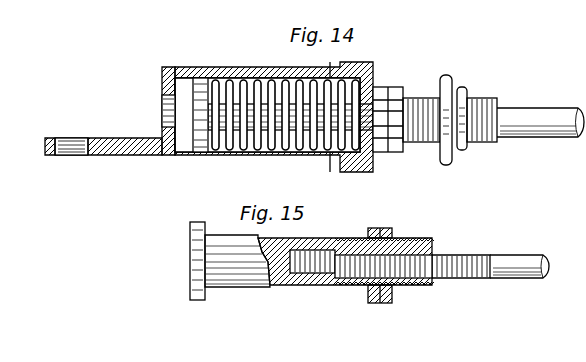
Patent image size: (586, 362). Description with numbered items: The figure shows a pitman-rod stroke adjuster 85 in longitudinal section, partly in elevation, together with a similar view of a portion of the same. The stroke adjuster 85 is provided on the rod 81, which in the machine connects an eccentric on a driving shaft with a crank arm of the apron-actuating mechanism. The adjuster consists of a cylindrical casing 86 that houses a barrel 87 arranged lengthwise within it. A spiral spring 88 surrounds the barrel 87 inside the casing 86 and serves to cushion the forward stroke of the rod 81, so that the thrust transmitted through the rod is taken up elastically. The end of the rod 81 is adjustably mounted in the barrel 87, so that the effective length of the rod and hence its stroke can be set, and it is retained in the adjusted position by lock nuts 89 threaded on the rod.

In FIG. 14, the rod 81 is at (498, 116).
In FIG. 15, the rod 81 is at (489, 258).
In FIG. 14, the stroke adjuster 85 is at (274, 107).
In FIG. 14, the cylindrical casing 86 is at (228, 156).
In FIG. 14, the barrel 87 is at (297, 132).
In FIG. 15, the barrel 87 is at (268, 290).
In FIG. 14, the spiral spring 88 is at (178, 157).
In FIG. 14, the lock nuts 89 is at (462, 90).